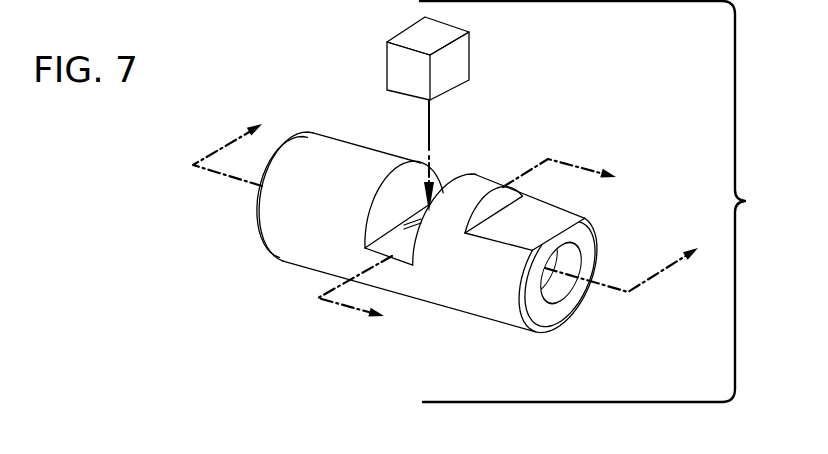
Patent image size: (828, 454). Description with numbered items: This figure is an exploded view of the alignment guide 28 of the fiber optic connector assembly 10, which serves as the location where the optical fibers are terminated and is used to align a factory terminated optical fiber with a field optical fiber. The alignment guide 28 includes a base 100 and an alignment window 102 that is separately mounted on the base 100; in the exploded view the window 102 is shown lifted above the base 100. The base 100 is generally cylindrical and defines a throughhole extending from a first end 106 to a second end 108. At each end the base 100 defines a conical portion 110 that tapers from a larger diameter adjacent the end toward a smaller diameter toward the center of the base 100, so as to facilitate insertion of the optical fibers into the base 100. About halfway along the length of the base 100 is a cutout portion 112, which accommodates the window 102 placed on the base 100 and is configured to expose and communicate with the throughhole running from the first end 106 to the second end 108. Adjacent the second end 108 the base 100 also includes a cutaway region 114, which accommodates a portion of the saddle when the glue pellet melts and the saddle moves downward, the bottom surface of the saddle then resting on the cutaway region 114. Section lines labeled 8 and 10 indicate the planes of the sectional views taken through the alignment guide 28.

The alignment guide 28 is at (601, 201).
The base 100 is at (278, 235).
The alignment window 102 is at (458, 62).
The first end 106 is at (257, 231).
The second end 108 is at (558, 318).
The conical portion 110 is at (562, 285).
The cutout portion 112 is at (414, 178).
The cutaway region 114 is at (567, 220).
The section line 8- 8 is at (459, 197).
The fiber optic connector assembly 10 is at (492, 249).